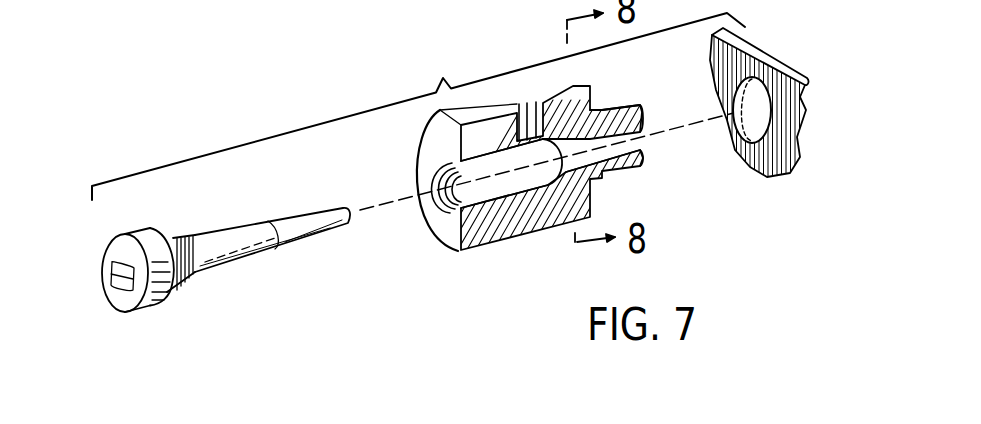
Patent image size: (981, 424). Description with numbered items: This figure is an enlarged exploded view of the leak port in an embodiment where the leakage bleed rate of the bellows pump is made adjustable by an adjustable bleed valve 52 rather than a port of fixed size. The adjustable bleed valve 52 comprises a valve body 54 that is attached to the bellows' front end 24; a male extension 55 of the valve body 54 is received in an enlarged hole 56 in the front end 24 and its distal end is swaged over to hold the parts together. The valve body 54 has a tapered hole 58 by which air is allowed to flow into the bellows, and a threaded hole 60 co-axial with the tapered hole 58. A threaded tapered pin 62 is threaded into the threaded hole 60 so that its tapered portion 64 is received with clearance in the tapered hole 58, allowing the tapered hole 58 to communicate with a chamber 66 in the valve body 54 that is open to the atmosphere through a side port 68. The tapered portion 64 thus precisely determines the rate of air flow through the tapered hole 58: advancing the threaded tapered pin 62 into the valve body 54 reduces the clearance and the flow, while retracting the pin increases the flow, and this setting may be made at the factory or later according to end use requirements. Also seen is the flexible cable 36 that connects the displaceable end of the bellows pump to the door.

The bellows front end 24 is at (786, 158).
The flexible cable 36 is at (96, 0).
The adjustable bleed valve 52 is at (481, 95).
The valve body 54 is at (470, 251).
The male extension 55 is at (625, 110).
The enlarged hole 56 is at (797, 88).
The tapered hole 58 is at (620, 160).
The threaded hole 60 is at (427, 207).
The threaded tapered pin 62 is at (153, 308).
The tapered portion 64 is at (302, 238).
The chamber 66 is at (529, 187).
The side port 68 is at (548, 98).